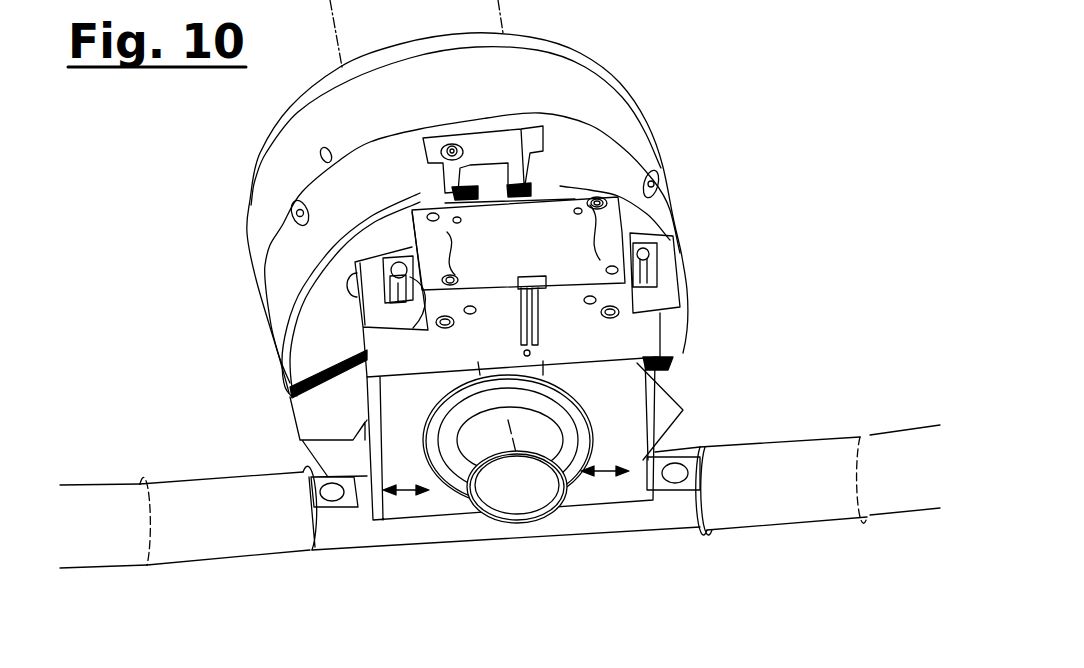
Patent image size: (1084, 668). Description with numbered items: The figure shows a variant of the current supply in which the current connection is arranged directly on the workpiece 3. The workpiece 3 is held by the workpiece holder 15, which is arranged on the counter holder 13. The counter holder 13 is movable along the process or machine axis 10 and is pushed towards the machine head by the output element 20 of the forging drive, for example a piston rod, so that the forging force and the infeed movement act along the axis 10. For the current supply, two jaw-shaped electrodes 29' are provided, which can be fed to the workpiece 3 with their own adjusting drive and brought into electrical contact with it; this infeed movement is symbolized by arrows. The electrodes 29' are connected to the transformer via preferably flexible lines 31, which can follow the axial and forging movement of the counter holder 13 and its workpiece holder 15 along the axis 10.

The output element 20 is at (413, 28).
The counter holder 13 is at (630, 133).
The workpiece holder 15 is at (317, 317).
The axis 10 is at (498, 375).
The line 31 is at (182, 530).
The jaw-shaped electrodes 29' is at (495, 408).
The workpiece 3 is at (518, 503).